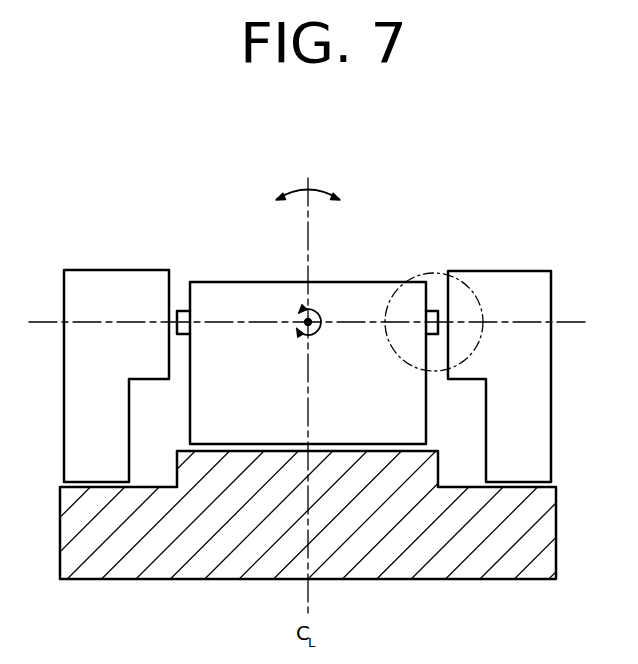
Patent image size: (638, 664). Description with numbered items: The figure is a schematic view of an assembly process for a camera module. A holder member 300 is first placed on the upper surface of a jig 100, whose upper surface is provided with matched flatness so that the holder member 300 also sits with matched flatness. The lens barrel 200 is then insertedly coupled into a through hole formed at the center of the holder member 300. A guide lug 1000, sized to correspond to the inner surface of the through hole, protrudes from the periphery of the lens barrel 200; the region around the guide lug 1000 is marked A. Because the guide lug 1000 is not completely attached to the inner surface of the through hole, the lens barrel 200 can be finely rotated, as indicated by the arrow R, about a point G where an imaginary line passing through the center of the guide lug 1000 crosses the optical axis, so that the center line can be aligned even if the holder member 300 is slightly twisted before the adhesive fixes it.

The jig 100 is at (382, 556).
The lens barrel 200 is at (367, 302).
The holder member 300 is at (536, 288).
The guide lug 1000 is at (434, 311).
The detail region A is at (455, 300).
The point G is at (303, 317).
The rotation direction R is at (317, 195).